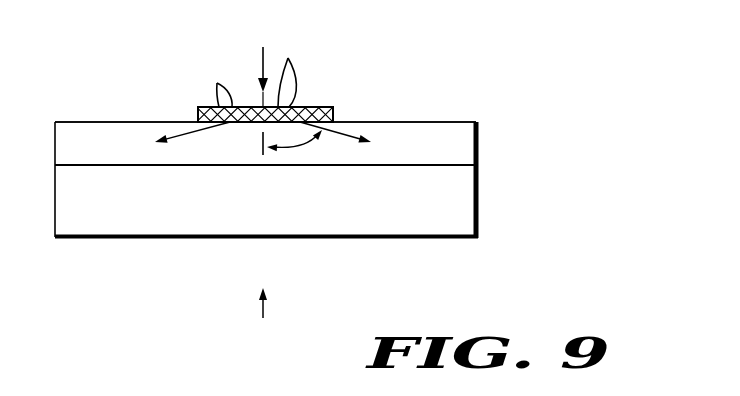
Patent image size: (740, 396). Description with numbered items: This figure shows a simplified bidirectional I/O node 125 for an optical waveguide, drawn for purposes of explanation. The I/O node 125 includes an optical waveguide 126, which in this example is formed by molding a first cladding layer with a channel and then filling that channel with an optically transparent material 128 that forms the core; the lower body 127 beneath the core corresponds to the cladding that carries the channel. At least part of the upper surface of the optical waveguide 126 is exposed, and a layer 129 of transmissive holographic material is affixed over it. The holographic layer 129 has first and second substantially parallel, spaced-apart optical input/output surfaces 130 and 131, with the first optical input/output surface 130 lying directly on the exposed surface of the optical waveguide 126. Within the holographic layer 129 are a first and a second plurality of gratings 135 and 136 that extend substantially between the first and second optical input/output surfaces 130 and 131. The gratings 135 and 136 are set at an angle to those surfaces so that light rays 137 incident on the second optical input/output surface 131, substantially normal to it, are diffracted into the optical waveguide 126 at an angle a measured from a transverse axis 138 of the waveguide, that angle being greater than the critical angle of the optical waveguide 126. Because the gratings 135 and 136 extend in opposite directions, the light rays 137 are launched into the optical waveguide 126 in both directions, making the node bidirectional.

The I/O node 125 is at (264, 322).
The optical waveguide 126 is at (548, 155).
The substrate 127 is at (466, 205).
The optically transparent material 128 is at (466, 143).
The layer of transmissive holographic material 129 is at (333, 116).
The first optical input/output surface 130 is at (202, 120).
The second optical input/output surface 131 is at (308, 106).
The first plurality of gratings 135 is at (303, 68).
The second plurality of gratings 136 is at (200, 82).
The light rays 137 is at (262, 58).
The transverse axis 138 is at (263, 138).
The angle a is at (293, 145).